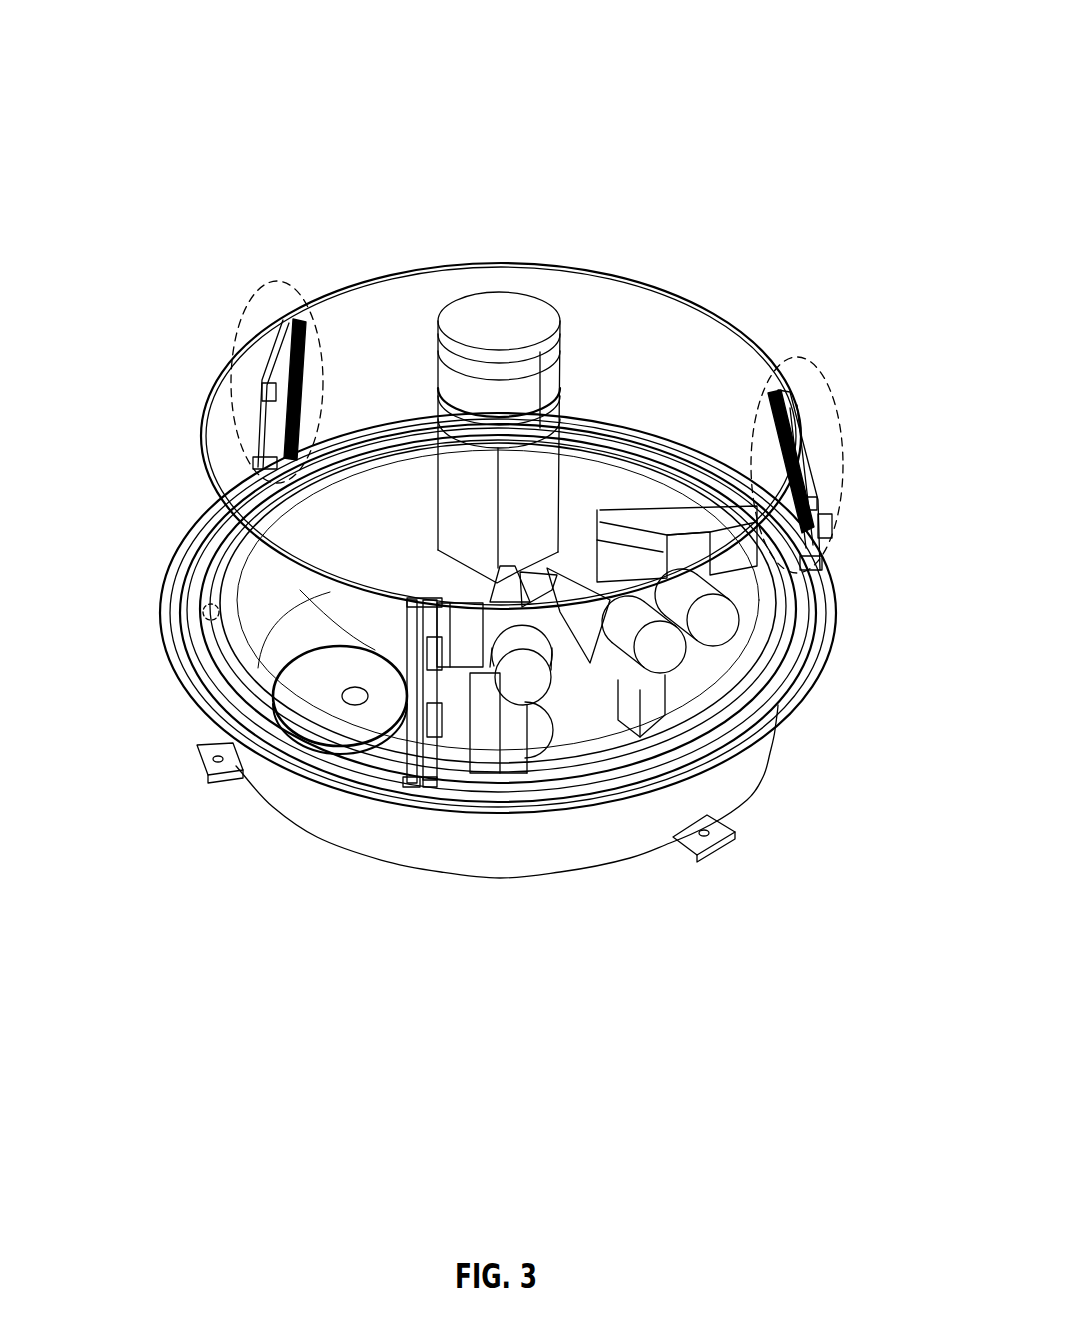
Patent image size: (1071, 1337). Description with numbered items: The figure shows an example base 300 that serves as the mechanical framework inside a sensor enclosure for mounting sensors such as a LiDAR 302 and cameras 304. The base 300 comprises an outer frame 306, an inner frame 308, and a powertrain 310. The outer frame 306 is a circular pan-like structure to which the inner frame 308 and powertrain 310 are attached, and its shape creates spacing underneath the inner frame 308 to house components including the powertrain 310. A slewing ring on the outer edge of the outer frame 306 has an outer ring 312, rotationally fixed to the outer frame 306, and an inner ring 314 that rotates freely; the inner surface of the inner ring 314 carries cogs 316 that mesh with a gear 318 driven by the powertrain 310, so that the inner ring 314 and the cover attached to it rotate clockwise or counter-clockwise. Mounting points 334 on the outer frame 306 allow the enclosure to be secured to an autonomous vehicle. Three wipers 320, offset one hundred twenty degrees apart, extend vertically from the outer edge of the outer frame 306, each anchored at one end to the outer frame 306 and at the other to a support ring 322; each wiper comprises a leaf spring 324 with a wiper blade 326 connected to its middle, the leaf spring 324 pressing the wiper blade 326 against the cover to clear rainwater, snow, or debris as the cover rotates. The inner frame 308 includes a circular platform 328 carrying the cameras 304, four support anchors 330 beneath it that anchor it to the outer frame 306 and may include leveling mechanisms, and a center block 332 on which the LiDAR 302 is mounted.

The base 300 is at (96, 43).
The LiDAR 302 is at (452, 385).
The cameras 304 is at (672, 658).
The outer frame 306 is at (713, 790).
The inner frame 308 is at (423, 537).
The powertrain 310 is at (450, 757).
The outer ring 312 is at (823, 593).
The inner ring 314 is at (797, 653).
The cogs 316 is at (213, 610).
The gear 318 is at (333, 723).
The wipers 320 is at (242, 330).
The support ring 322 is at (720, 318).
The leaf spring 324 is at (827, 527).
The wiper blade 326 is at (797, 493).
The circular platform 328 is at (320, 548).
The support anchors 330 is at (512, 740).
The center block 332 is at (550, 447).
The mounting points 334 is at (213, 768).